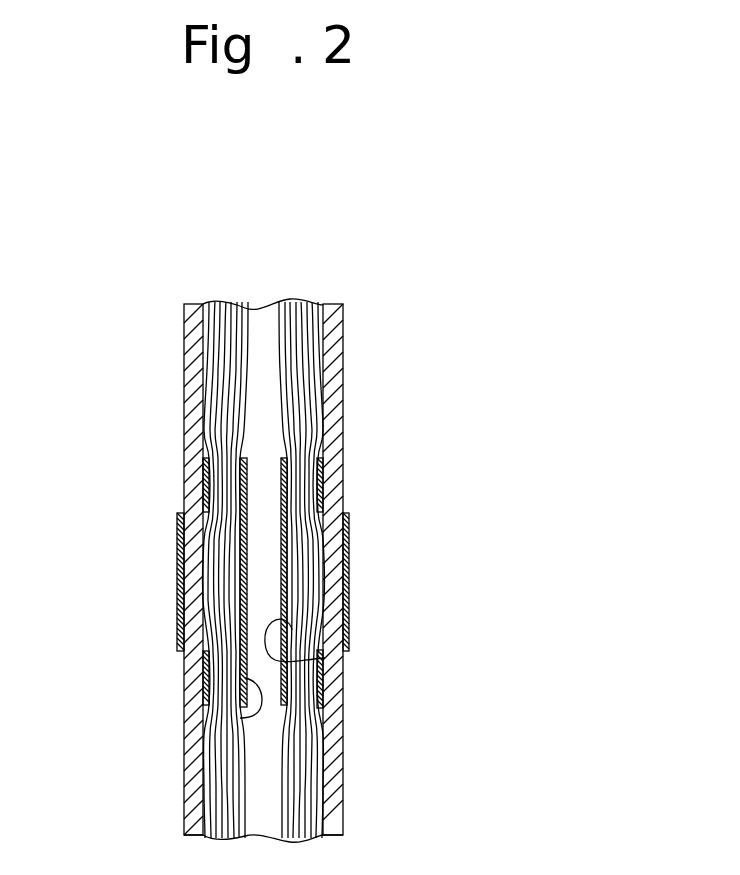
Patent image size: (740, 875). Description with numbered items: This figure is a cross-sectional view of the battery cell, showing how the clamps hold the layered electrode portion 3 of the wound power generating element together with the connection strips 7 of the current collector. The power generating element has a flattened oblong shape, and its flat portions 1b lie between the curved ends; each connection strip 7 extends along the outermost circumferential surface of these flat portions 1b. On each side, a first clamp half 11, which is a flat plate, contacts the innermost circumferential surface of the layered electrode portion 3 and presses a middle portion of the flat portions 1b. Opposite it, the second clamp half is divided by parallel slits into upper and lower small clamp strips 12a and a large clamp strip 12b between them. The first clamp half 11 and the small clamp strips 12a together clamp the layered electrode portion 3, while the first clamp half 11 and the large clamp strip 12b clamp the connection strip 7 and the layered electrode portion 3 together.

The layered electrode portion 3 is at (229, 311).
The connection strip 7 is at (193, 367).
The small clamp strip 12a is at (205, 479).
The large clamp strip 12b is at (181, 575).
The first clamp half 11 is at (325, 658).
The flat portion 1b is at (193, 812).